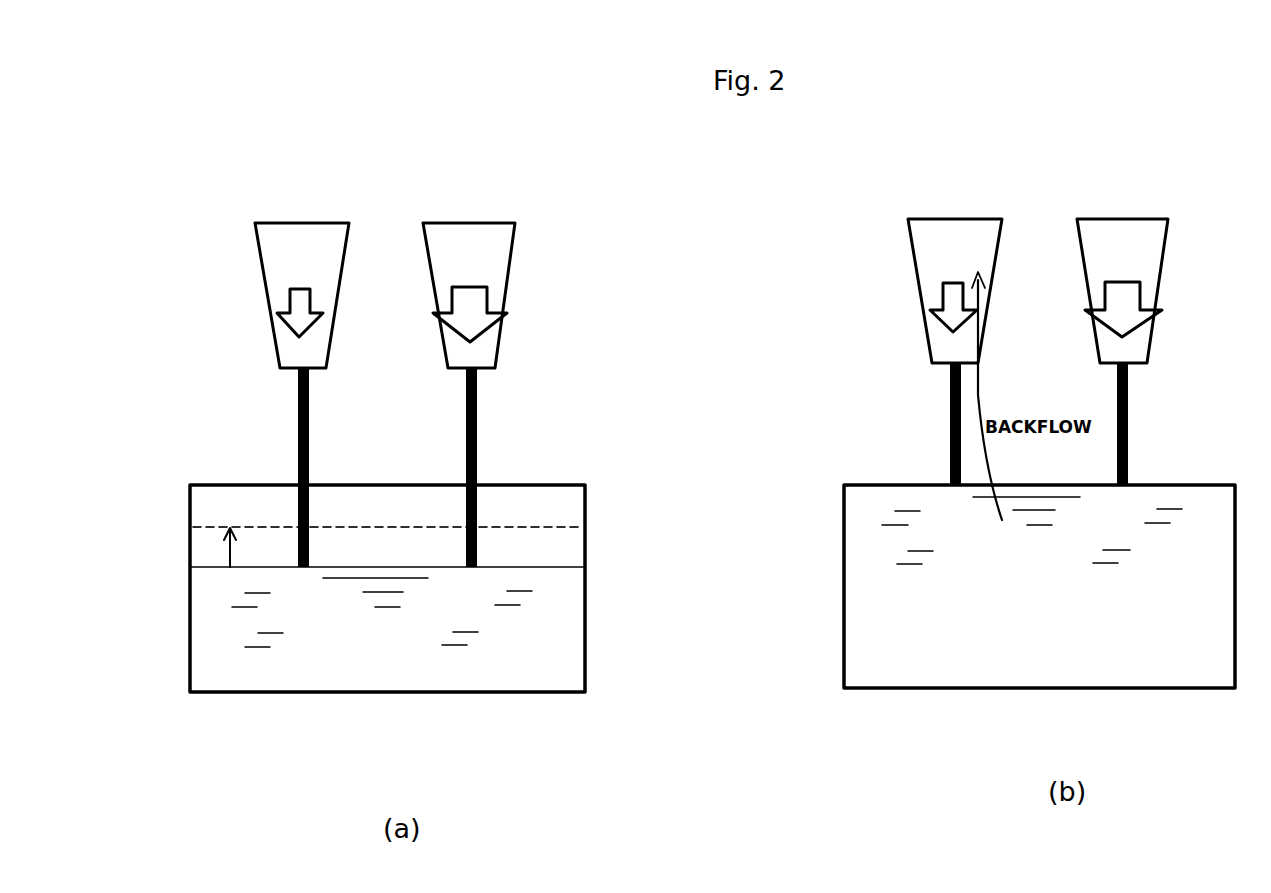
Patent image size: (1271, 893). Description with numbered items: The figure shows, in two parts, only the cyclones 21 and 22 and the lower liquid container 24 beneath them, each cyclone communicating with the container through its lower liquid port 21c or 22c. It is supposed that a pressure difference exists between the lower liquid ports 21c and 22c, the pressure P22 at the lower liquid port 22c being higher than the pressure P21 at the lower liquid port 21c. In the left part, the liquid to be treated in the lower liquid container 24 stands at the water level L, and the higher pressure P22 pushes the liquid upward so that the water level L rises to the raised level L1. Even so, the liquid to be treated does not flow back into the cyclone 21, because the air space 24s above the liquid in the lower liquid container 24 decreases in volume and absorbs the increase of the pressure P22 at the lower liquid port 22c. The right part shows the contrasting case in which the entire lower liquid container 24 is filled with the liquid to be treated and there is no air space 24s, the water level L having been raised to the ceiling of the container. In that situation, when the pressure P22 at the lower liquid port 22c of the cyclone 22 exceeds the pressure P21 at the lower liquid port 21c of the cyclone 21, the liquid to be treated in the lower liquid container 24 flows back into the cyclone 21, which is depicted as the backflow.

The cyclone 21 is at (268, 223).
The cyclone 22 is at (480, 220).
The pressure at the lower liquid port 21c P21 is at (287, 310).
The pressure at the lower liquid port 22c P22 is at (487, 303).
The lower liquid port 21c is at (297, 368).
The lower liquid port 22c is at (470, 368).
The lower liquid container 24 is at (190, 613).
The air space 24s is at (420, 520).
The water level L is at (598, 564).
The raised water level L1 is at (178, 531).